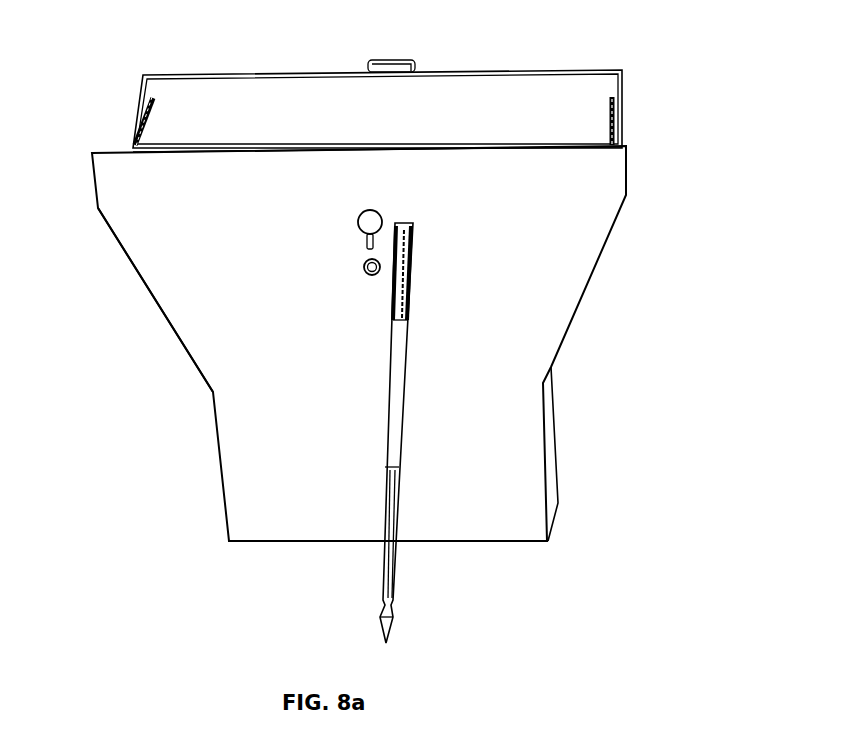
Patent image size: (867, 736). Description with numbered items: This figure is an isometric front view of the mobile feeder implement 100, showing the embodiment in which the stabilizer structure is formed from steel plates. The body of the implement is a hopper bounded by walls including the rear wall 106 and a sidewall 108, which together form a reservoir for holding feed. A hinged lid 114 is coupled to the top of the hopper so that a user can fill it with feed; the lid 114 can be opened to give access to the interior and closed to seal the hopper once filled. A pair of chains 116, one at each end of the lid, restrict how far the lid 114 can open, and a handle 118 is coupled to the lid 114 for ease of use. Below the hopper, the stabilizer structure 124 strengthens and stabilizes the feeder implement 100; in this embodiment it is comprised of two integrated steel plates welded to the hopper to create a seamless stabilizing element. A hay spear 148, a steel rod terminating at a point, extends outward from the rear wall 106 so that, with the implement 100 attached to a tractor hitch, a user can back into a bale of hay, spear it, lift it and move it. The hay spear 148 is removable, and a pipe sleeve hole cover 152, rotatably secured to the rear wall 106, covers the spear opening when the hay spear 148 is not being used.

The mobile feeder implement 100 is at (643, 21).
The rear wall 106 is at (582, 227).
The sidewall 108 is at (148, 292).
The hinged lid 114 is at (545, 80).
The chains 116 is at (137, 113).
The handle 118 is at (393, 60).
The stabilizer structure 124 is at (559, 480).
The hay spear 148 is at (400, 437).
The pipe sleeve hole cover 152 is at (384, 212).